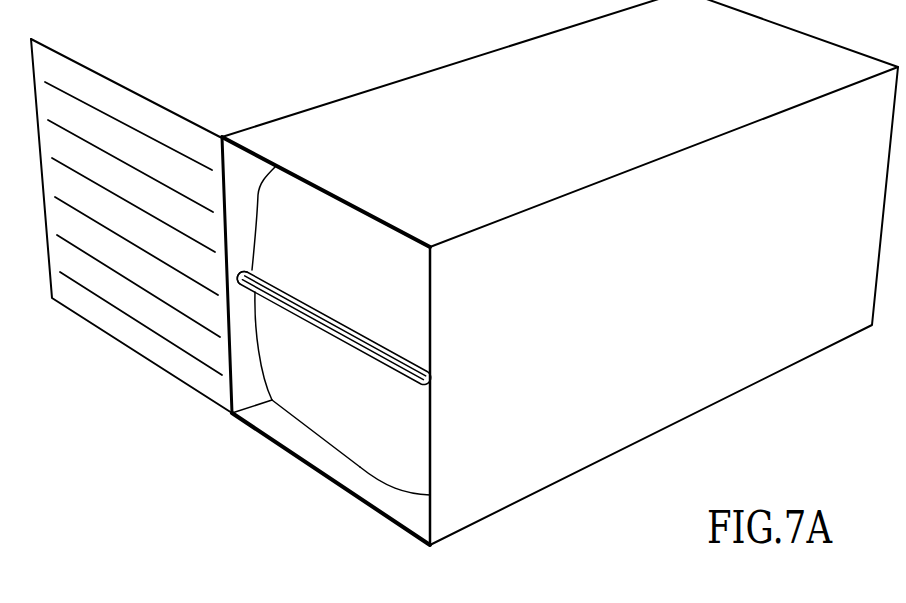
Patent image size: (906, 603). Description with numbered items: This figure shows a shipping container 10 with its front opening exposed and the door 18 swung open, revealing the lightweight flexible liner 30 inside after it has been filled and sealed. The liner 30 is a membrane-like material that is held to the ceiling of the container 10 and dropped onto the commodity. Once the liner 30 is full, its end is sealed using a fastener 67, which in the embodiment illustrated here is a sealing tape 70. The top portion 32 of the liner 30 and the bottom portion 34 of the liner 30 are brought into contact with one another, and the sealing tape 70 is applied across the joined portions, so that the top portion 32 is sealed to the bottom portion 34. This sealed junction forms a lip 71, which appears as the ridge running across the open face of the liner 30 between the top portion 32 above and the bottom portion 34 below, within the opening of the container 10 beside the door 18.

The shipping container 10 is at (507, 45).
The door 18 is at (115, 322).
The liner 30 is at (364, 464).
The top portion 32 is at (283, 203).
The bottom portion 34 is at (407, 485).
The fastener 67 is at (315, 393).
The sealing tape 70 is at (313, 333).
The lip 71 is at (250, 268).